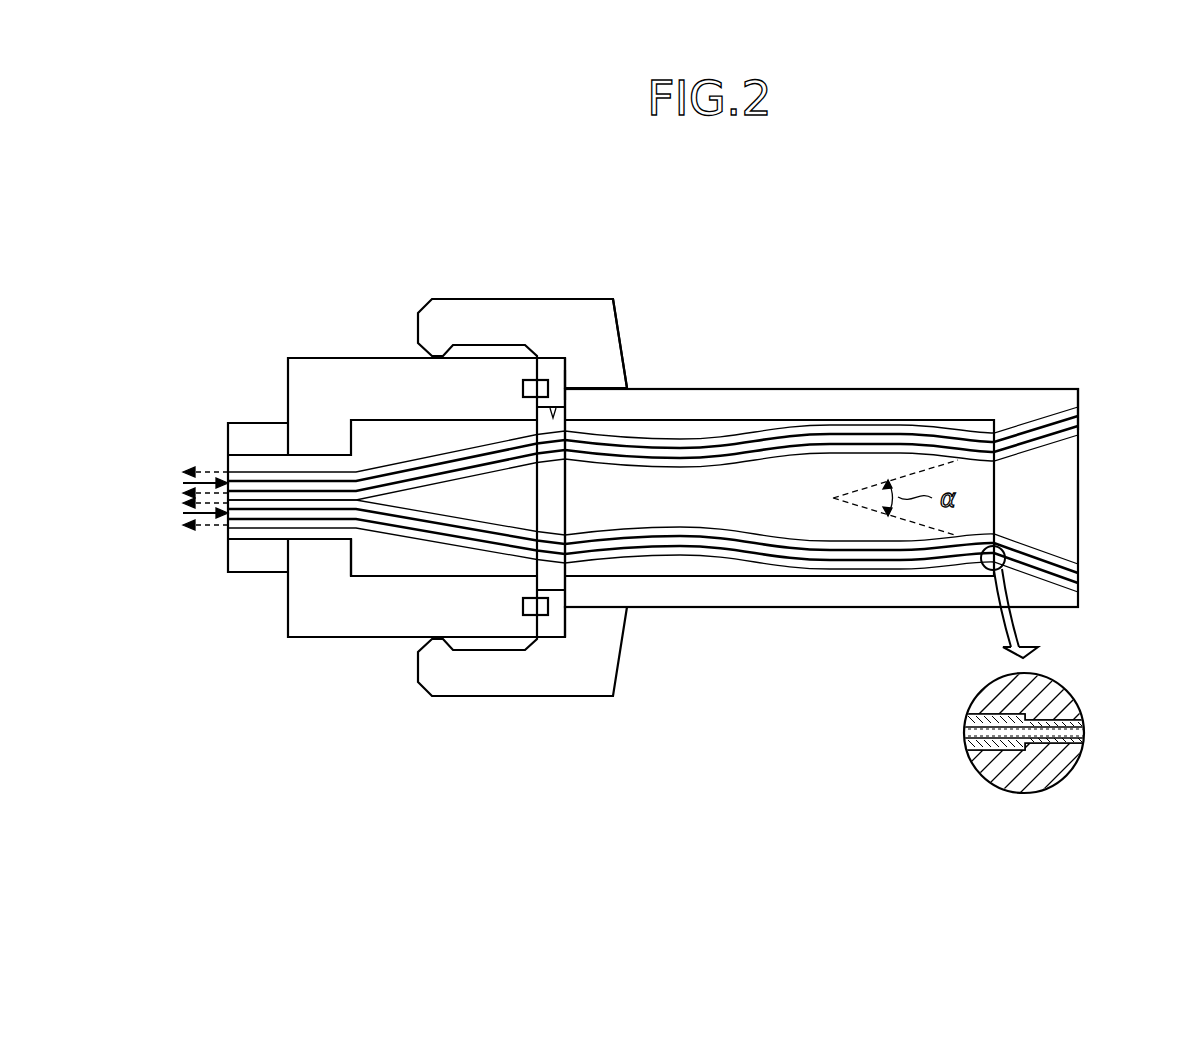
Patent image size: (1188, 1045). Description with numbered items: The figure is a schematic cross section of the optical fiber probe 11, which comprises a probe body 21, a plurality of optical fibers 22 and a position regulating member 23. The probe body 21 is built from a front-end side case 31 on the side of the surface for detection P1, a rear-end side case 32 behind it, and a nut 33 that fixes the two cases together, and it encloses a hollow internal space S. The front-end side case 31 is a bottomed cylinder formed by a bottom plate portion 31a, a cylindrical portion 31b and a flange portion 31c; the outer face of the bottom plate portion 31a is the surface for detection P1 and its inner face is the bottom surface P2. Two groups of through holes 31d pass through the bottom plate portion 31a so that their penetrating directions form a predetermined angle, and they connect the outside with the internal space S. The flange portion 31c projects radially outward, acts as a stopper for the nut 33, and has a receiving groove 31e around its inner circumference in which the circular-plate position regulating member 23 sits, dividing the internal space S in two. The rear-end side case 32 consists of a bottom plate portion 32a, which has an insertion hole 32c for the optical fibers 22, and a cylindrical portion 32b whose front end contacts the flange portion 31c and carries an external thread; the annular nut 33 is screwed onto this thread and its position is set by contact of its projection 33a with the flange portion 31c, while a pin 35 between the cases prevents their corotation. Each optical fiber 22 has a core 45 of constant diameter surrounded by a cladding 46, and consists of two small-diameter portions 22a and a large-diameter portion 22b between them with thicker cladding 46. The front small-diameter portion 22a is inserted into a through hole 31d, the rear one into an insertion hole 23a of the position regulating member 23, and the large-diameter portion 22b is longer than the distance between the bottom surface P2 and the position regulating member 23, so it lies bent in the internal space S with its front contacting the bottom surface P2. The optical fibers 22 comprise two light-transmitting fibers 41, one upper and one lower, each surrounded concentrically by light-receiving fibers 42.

The optical fiber probe 11 is at (825, 263).
The probe body 21 is at (752, 387).
The optical fibers 22 is at (708, 562).
The small-diameter portion 22a is at (405, 458).
The large-diameter portion 22b is at (808, 562).
The position regulating member 23 is at (553, 575).
The insertion holes 23a is at (548, 552).
The front-end side case 31 is at (708, 388).
The bottom plate portion 31a is at (1057, 523).
The cylindrical portion 31b is at (878, 400).
The flange portion 31c is at (550, 368).
The through holes 31d is at (1078, 398).
The receiving groove 31e is at (566, 387).
The rear-end side case 32 is at (382, 358).
The bottom plate portion 32a is at (317, 563).
The cylindrical portion 32b is at (407, 625).
The insertion hole 32c is at (228, 533).
The nut 33 is at (471, 298).
The projection 33a is at (620, 356).
The pin 35 is at (537, 608).
The light-transmitting fibers 41 is at (272, 508).
The light-receiving fibers 42 is at (292, 515).
The core 45 is at (1085, 738).
The cladding 46 is at (1085, 725).
The internal space S is at (683, 512).
The surface for detection P1 is at (1080, 497).
The bottom surface P2 is at (995, 500).